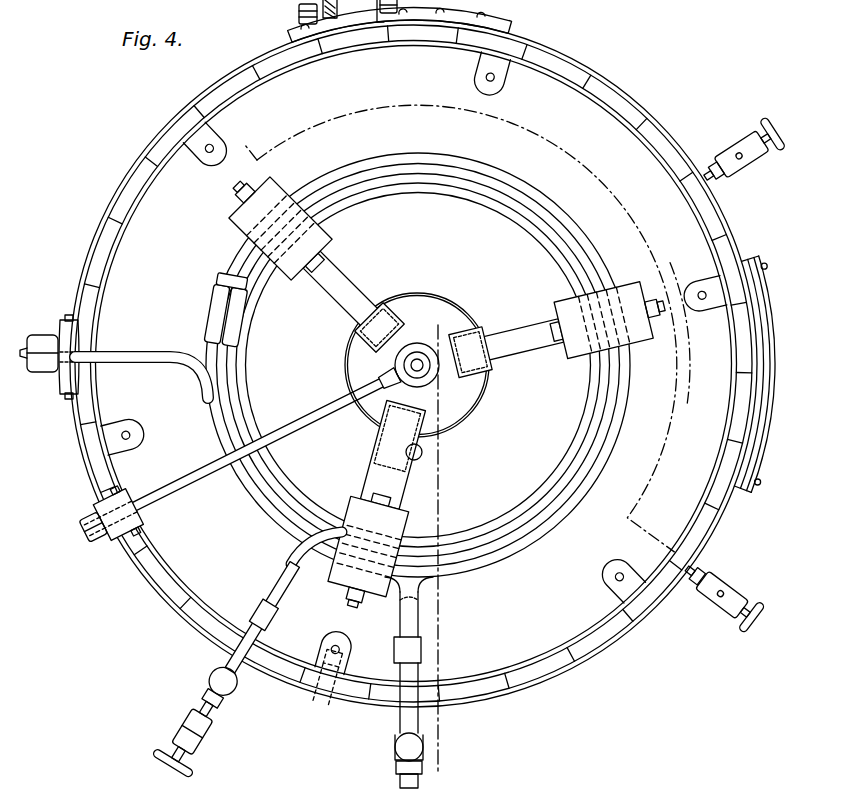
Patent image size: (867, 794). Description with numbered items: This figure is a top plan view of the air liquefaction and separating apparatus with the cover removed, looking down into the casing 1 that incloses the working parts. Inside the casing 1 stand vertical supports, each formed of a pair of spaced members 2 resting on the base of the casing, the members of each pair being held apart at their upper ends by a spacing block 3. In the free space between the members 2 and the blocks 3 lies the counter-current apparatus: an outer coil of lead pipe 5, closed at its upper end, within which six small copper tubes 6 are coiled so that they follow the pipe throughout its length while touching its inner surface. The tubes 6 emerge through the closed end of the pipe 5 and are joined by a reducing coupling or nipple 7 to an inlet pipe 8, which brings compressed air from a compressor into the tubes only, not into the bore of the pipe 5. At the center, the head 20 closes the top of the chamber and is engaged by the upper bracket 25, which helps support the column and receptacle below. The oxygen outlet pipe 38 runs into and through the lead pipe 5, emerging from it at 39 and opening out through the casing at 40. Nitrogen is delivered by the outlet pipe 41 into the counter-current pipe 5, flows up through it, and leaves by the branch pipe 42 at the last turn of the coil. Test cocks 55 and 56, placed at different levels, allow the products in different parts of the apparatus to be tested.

The casing 1 is at (618, 645).
The spaced members 2 is at (283, 186).
The spacing block 3 is at (442, 748).
The outer coil of pipe 5 is at (390, 153).
The small conduits or tubes 6 is at (583, 450).
The reducing coupling or nipple 7 is at (218, 318).
The inlet pipe 8 is at (232, 258).
The head 20 is at (453, 317).
The upper bracket 25 is at (337, 283).
The pipe 38 is at (282, 593).
The emergence point of pipe 38 39 is at (262, 632).
The casing outlet of pipe 38 40 is at (242, 677).
The outlet pipe 41 is at (422, 453).
The branch pipe 42 is at (403, 624).
The test cock 55 is at (714, 160).
The test cock 56 is at (727, 607).